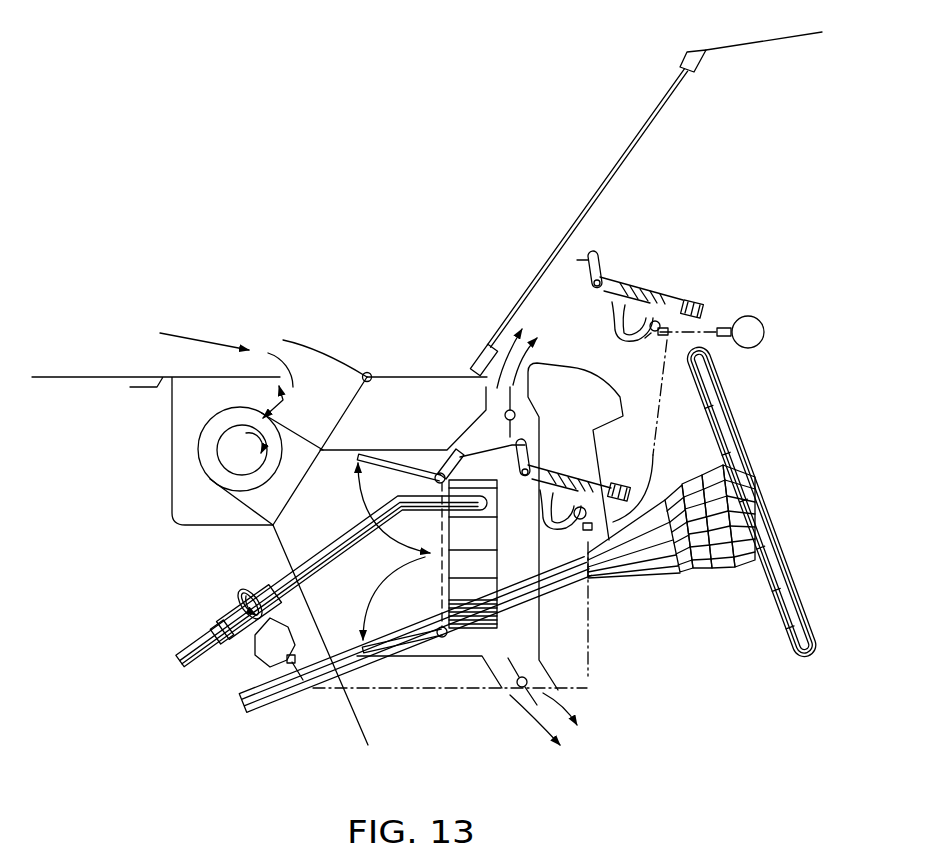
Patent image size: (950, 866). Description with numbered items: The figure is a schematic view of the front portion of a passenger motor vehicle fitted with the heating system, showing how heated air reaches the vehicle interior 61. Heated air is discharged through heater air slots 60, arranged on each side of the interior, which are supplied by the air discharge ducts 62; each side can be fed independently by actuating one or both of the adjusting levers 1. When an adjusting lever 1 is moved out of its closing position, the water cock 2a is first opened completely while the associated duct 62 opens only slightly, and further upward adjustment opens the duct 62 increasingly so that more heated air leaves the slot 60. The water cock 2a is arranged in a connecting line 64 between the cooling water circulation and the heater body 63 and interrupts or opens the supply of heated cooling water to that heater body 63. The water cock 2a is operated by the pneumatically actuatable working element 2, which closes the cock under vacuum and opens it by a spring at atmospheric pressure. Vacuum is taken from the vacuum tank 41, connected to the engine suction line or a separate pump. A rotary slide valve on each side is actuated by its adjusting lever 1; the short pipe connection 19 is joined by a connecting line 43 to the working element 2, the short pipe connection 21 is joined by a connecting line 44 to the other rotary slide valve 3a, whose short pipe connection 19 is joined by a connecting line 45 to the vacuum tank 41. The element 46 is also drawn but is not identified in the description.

The adjusting lever 1 is at (626, 265).
The pneumatically actuatable working element 2 is at (263, 637).
The water cock 2a is at (249, 593).
The other rotary slide valve 3a is at (648, 338).
The short pipe connection 19 is at (583, 529).
The short pipe connection 21 is at (608, 490).
The vacuum tank 41 is at (764, 330).
The connecting line 43 is at (589, 678).
The connecting line 44 is at (655, 422).
The connecting line 45 is at (708, 330).
The stop block 46 is at (697, 302).
The heater air slots 60 is at (514, 373).
The vehicle interior 61 is at (747, 188).
The air discharge duct 62 is at (478, 418).
The heater body 63 is at (490, 558).
The connecting line 64 is at (362, 533).